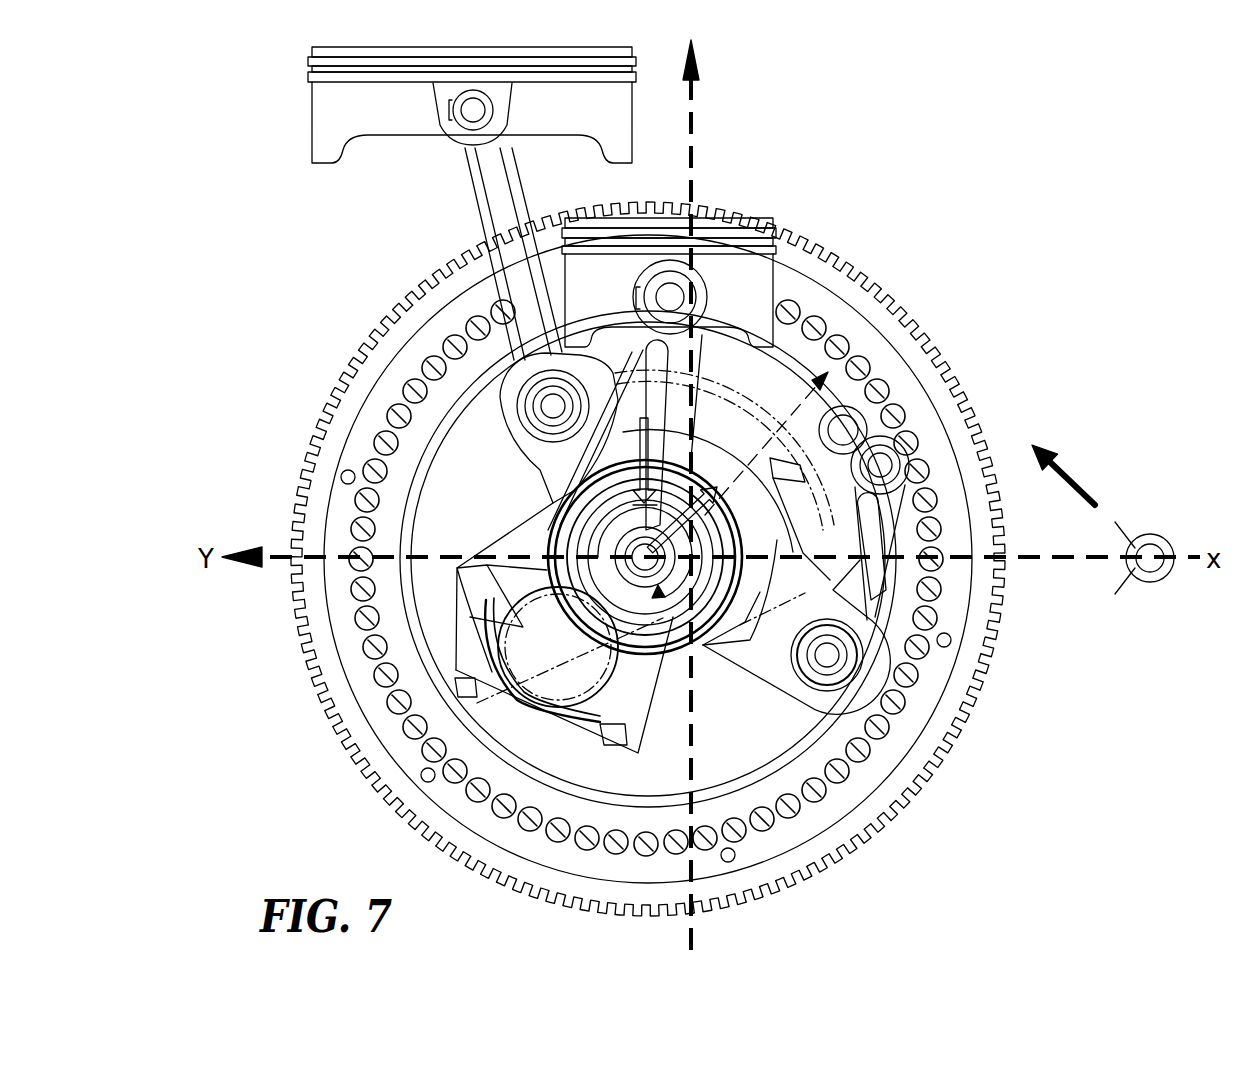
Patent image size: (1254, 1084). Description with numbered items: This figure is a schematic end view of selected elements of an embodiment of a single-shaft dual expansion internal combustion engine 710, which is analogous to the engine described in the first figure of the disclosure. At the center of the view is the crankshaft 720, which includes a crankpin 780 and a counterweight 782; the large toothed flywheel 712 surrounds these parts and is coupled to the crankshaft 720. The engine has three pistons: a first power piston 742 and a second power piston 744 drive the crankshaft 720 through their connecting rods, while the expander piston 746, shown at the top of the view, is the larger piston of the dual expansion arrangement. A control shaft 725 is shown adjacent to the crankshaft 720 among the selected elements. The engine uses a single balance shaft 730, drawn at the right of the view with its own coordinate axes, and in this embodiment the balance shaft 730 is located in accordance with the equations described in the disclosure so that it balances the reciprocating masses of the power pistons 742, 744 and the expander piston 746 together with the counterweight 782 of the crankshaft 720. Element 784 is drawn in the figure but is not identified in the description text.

The single-shaft dual expansion internal combustion engine 710 is at (228, 85).
The expander piston 746 is at (312, 115).
The first power piston 742 is at (600, 297).
The second power piston 744 is at (506, 262).
The flywheel 712 is at (377, 440).
The crankshaft 720 is at (463, 652).
The control shaft 725 is at (862, 430).
The single balance shaft 730 is at (1150, 537).
The crankpin 780 is at (542, 695).
The counterweight 782 is at (815, 520).
The lever arm 784 is at (865, 672).